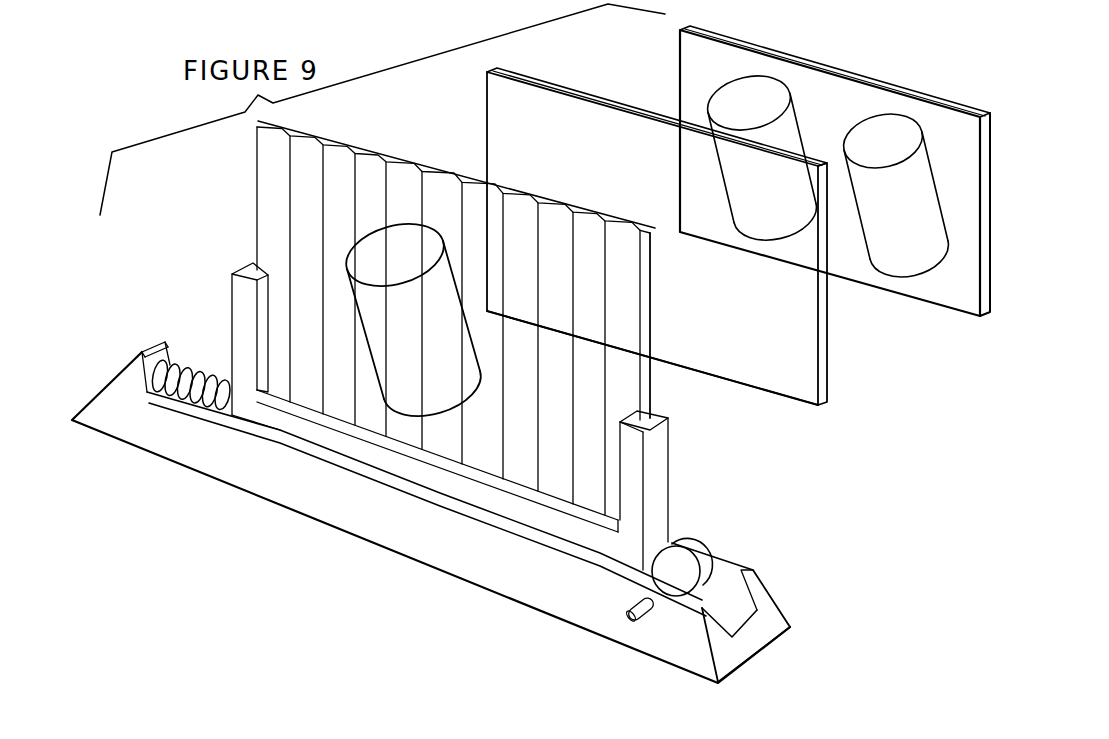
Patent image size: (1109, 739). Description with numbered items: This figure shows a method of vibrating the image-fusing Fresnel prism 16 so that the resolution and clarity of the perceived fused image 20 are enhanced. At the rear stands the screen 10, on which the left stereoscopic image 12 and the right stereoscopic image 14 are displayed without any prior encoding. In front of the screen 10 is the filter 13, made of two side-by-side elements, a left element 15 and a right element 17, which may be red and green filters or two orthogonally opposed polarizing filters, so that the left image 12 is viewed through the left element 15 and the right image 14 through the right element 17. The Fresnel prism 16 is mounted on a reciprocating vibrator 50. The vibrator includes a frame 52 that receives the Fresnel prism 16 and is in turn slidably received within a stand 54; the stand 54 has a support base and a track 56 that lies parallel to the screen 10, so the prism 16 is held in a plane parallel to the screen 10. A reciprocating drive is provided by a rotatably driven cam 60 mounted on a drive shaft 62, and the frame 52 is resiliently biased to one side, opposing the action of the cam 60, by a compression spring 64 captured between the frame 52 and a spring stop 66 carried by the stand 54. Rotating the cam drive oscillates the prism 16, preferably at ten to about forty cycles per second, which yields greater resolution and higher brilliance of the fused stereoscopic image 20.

The screen 10 is at (850, 78).
The left stereoscopic image 12 is at (717, 108).
The right stereoscopic image 14 is at (877, 133).
The left element 15 is at (574, 117).
The filter 13 is at (840, 378).
The right element 17 is at (783, 382).
The Fresnel prism 16 is at (658, 389).
The fused image 20 is at (373, 233).
The reciprocating vibrator 50 is at (180, 448).
The frame 52 is at (655, 472).
The stand 54 is at (720, 547).
The track 56 is at (735, 620).
The cam 60 is at (684, 580).
The drive shaft 62 is at (633, 622).
The compression spring 64 is at (193, 366).
The spring stop 66 is at (165, 343).